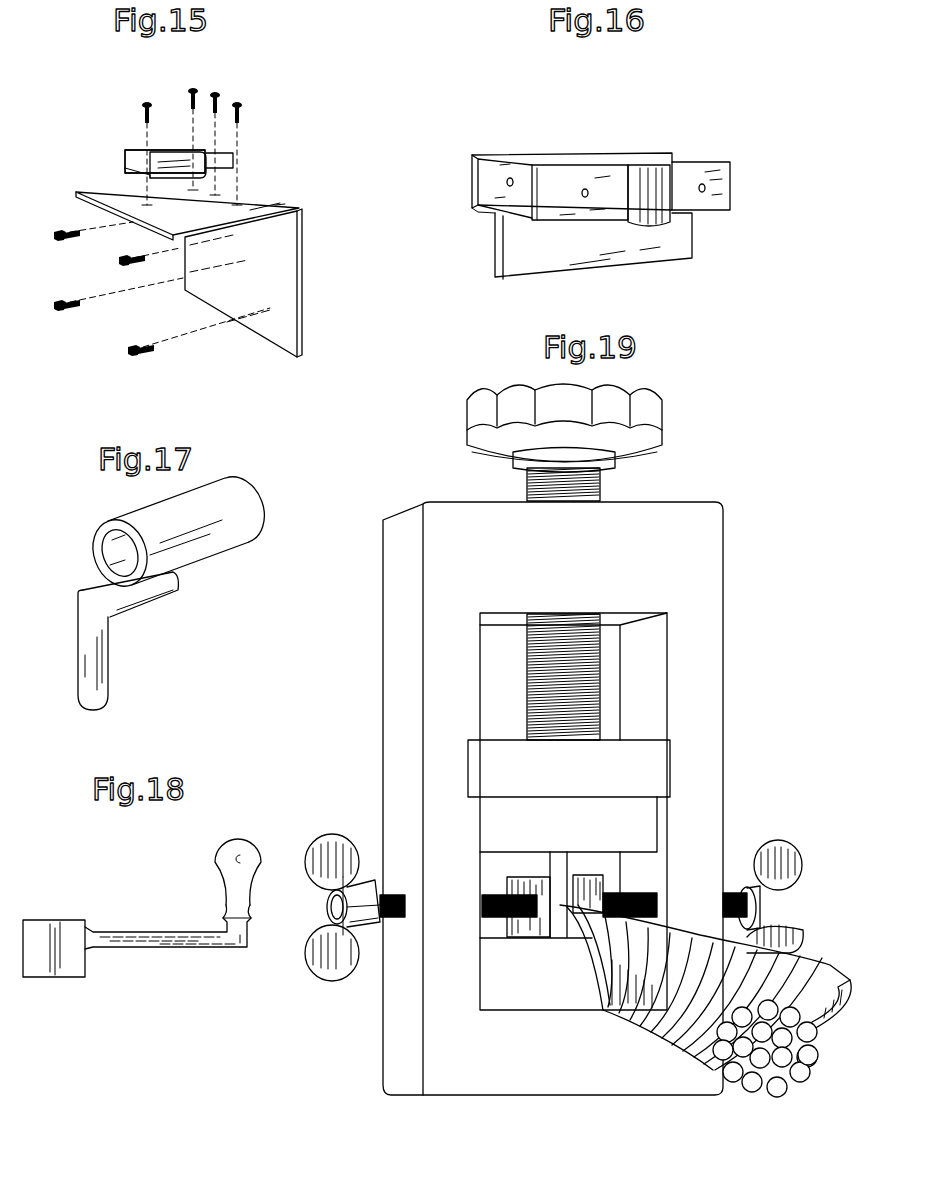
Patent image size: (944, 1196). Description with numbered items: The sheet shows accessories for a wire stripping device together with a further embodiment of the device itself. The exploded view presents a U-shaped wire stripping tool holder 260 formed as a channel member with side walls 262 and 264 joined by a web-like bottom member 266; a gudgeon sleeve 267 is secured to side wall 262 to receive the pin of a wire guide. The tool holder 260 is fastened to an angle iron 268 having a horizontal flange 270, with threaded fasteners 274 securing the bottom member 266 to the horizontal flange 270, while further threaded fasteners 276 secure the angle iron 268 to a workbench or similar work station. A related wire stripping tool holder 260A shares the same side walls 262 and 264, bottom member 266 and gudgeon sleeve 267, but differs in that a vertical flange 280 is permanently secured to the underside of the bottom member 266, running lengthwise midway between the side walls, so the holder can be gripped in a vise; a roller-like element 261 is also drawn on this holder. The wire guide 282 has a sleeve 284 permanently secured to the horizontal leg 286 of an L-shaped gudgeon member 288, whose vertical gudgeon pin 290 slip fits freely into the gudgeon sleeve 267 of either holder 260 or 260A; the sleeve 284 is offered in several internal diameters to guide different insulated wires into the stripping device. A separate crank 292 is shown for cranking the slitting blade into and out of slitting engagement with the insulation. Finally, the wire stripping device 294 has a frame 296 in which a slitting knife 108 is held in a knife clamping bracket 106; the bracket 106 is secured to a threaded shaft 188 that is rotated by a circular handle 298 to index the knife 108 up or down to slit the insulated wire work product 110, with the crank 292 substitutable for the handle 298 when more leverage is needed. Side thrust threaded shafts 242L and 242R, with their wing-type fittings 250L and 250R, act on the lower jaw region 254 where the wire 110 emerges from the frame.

In FIG. 15, the wire stripping tool holder 260 is at (167, 140).
In FIG. 16, the wire stripping tool holder 260A is at (625, 151).
In FIG. 16, the roller 261 is at (663, 217).
In FIG. 15, the side wall 262 is at (233, 163).
In FIG. 16, the side wall 262 is at (732, 190).
In FIG. 15, the side wall 264 is at (125, 155).
In FIG. 16, the side wall 264 is at (495, 167).
In FIG. 15, the bottom member 266 is at (125, 168).
In FIG. 16, the bottom member 266 is at (493, 212).
In FIG. 15, the gudgeon sleeve 267 is at (220, 152).
In FIG. 16, the gudgeon sleeve 267 is at (580, 192).
In FIG. 15, the angle iron 268 is at (257, 192).
In FIG. 15, the horizontal flange 270 is at (257, 211).
In FIG. 15, the threaded fasteners 274 is at (240, 106).
In FIG. 15, the threaded fasteners 276 is at (302, 272).
In FIG. 16, the vertical flange 280 is at (630, 267).
In FIG. 17, the wire guide 282 is at (218, 584).
In FIG. 17, the sleeve 284 is at (208, 557).
In FIG. 17, the horizontal leg 286 is at (113, 612).
In FIG. 17, the L-shaped gudgeon member 288 is at (121, 628).
In FIG. 17, the vertical gudgeon pin 290 is at (110, 686).
In FIG. 18, the crank 292 is at (135, 948).
In FIG. 19, the wire stripping device 294 is at (375, 784).
In FIG. 19, the frame 296 is at (381, 722).
In FIG. 19, the circular handle 298 is at (662, 414).
In FIG. 19, the threaded shaft 188 is at (603, 493).
In FIG. 19, the knife clamping bracket 106 is at (522, 778).
In FIG. 19, the slitting knife 108 is at (553, 872).
In FIG. 19, the insulated wire work product 110 is at (672, 1001).
In FIG. 19, the lower jaw 254 is at (588, 962).
In FIG. 19, the side thrust threaded shaft 242L is at (373, 950).
In FIG. 19, the side thrust threaded shaft 242R is at (738, 890).
In FIG. 19, the left bolt 250L is at (342, 909).
In FIG. 19, the right bolt 250R is at (792, 865).